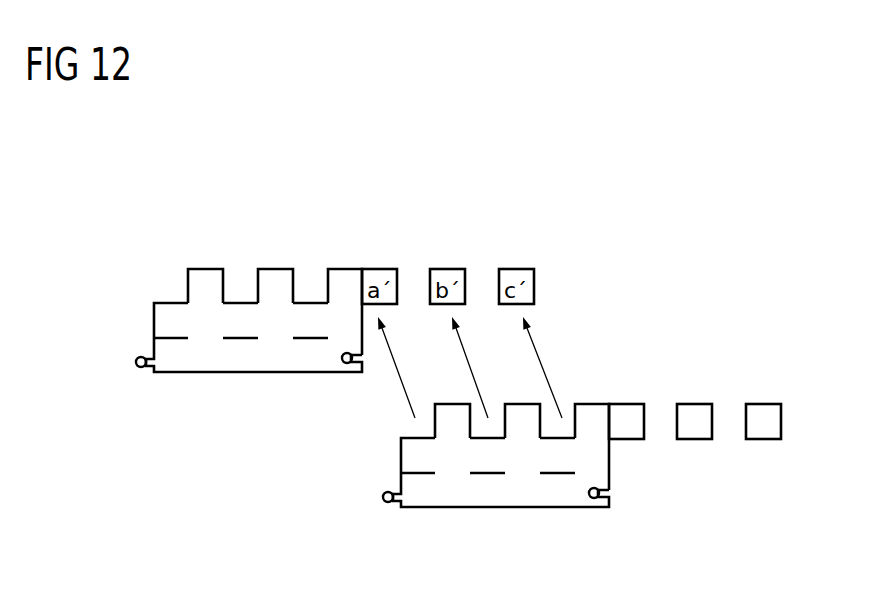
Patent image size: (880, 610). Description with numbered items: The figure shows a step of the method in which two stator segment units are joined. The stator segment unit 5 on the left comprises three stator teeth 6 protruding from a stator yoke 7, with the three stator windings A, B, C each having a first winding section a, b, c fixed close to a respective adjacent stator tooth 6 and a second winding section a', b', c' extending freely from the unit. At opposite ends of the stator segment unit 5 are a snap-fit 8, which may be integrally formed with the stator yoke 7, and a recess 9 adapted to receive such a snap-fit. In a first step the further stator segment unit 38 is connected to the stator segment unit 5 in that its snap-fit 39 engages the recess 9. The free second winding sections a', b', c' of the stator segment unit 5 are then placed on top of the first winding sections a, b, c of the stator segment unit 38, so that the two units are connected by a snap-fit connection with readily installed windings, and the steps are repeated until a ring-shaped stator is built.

The stator segment unit 5 is at (150, 213).
The stator tooth 6 is at (208, 325).
The stator yoke 7 is at (178, 356).
The snap-fit 8 is at (139, 372).
The recess 9 is at (350, 367).
The stator segment unit 38 is at (673, 362).
The snap-fit 39 is at (390, 501).